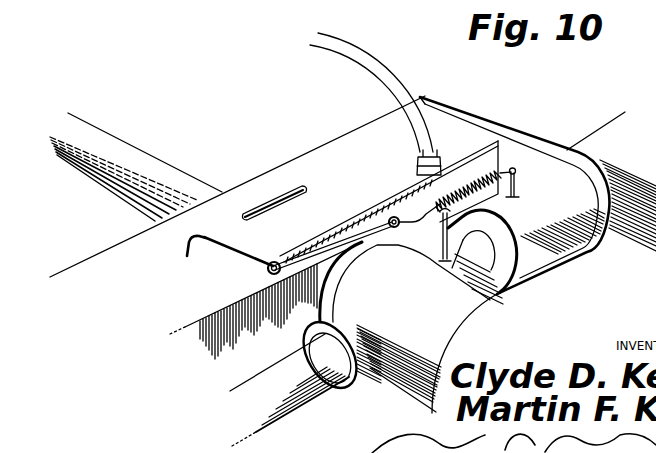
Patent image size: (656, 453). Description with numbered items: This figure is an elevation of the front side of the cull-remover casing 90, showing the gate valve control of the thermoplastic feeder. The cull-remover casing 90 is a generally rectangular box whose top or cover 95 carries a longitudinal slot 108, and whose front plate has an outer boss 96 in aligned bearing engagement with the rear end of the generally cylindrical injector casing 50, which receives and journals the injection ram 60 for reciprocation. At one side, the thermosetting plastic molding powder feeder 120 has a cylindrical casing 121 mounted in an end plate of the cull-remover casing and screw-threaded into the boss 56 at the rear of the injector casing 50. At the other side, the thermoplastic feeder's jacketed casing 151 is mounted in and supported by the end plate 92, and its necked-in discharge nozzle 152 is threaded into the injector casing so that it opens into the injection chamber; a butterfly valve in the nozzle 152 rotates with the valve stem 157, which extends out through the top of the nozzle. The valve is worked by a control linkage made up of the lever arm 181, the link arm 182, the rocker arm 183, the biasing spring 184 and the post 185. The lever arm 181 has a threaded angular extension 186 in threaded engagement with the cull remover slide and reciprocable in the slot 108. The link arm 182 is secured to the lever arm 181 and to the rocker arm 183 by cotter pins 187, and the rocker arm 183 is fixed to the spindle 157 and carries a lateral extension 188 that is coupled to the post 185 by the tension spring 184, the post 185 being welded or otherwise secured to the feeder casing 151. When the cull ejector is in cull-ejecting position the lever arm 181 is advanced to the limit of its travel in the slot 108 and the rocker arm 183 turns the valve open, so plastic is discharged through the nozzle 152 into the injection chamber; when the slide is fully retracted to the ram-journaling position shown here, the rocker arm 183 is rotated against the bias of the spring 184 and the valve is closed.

The injector casing 50 is at (453, 308).
The boss 56 is at (365, 377).
The injection ram 60 is at (167, 183).
The cull-remover casing 90 is at (121, 244).
The end plate 92 is at (453, 107).
The top or cover 95 is at (167, 291).
The outer boss 96 is at (340, 272).
The longitudinal slot 108 is at (298, 200).
The thermosetting plastic molding powder feeder 120 is at (297, 406).
The cylindrical casing 121 is at (311, 375).
The jacketed casing 151 is at (611, 181).
The necked-in discharge nozzle 152 is at (482, 252).
The valve stem 157 is at (422, 279).
The lever arm 181 is at (228, 259).
The link arm 182 is at (311, 251).
The rocker arm 183 is at (418, 205).
The biasing spring 184 is at (470, 195).
The post 185 is at (517, 189).
The threaded angular extension 186 is at (188, 242).
The cotter pins 187 is at (274, 262).
The lateral extension 188 is at (435, 235).